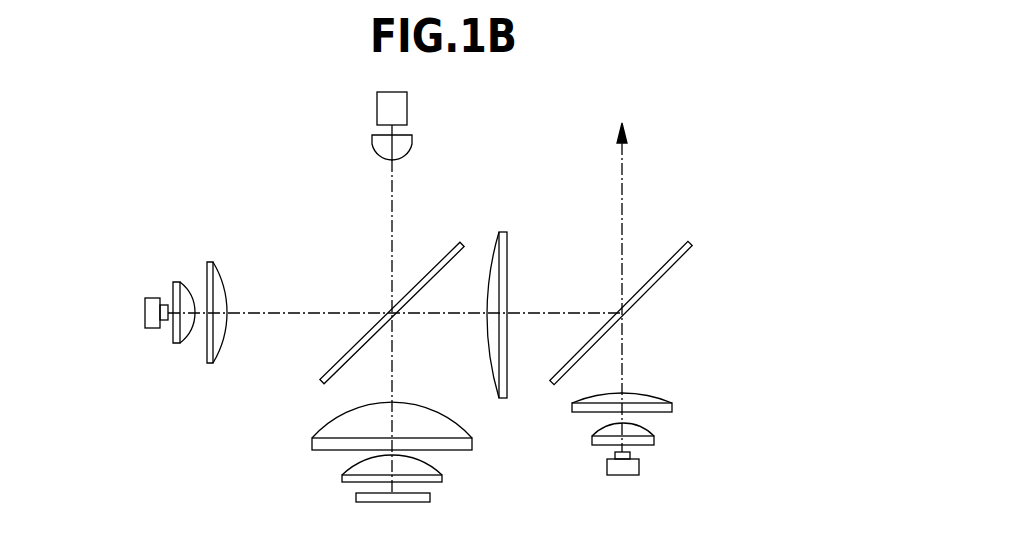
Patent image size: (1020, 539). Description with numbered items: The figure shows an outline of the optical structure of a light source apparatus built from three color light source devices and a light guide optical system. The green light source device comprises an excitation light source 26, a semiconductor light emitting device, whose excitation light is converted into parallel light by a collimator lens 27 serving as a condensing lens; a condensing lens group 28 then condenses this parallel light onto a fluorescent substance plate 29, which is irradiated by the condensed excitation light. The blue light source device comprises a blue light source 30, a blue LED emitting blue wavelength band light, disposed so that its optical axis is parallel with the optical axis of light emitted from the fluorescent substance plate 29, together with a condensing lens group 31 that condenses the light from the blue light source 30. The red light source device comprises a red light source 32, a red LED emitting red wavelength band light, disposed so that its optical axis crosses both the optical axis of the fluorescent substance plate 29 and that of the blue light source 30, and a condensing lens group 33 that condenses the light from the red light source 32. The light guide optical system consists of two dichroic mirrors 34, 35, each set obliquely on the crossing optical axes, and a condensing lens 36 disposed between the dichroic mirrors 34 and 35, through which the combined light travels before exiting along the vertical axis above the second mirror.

The excitation light source 26 is at (377, 108).
The collimator lens 27 is at (372, 145).
The condensing lens group 28 is at (305, 400).
The fluorescent substance plate 29 is at (356, 497).
The blue light source 30 is at (641, 468).
The condensing lens group 31 is at (678, 390).
The red light source 32 is at (153, 330).
The condensing lens group 33 is at (230, 260).
The dichroic mirror 34 is at (450, 245).
The dichroic mirror 35 is at (680, 264).
The condensing lens 36 is at (505, 232).